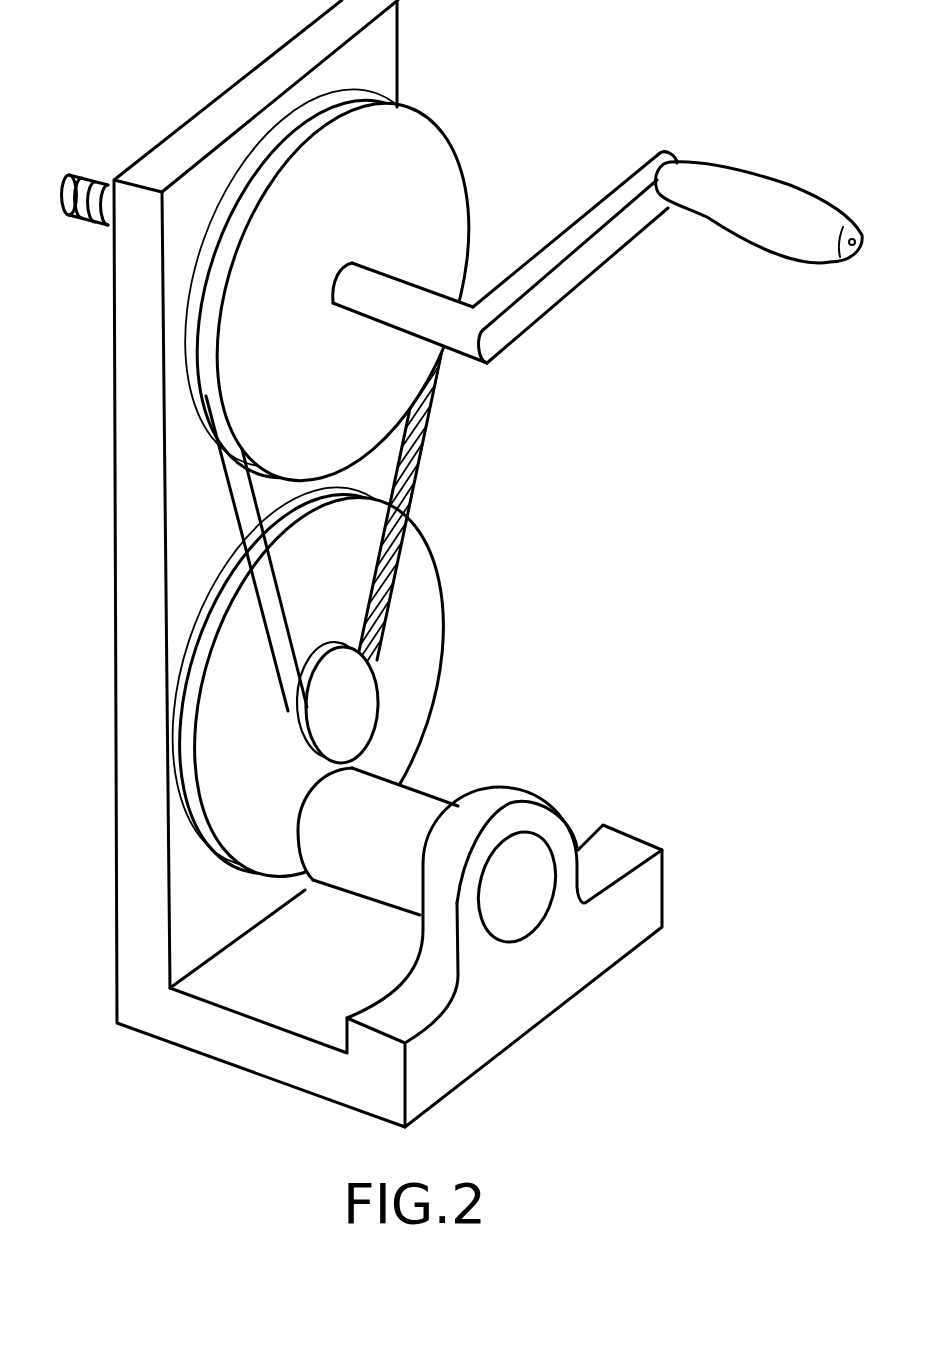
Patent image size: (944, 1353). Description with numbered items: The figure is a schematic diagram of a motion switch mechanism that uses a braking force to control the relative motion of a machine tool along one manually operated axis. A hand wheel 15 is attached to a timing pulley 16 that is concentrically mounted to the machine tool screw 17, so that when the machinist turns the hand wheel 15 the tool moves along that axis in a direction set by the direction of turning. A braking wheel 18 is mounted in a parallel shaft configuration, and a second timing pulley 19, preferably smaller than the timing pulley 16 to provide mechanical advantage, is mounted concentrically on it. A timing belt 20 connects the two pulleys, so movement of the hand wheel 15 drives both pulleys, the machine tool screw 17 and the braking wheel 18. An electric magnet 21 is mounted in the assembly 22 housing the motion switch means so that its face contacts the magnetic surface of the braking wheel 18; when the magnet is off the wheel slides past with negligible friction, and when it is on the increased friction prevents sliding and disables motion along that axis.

The hand wheel 15 is at (762, 177).
The timing pulley 16 is at (468, 195).
The machine tool screw 17 is at (90, 178).
The braking wheel 18 is at (438, 578).
The second timing pulley 19 is at (377, 708).
The timing belt 20 is at (423, 458).
The electric magnet 21 is at (307, 850).
The assembly 22 is at (290, 1068).